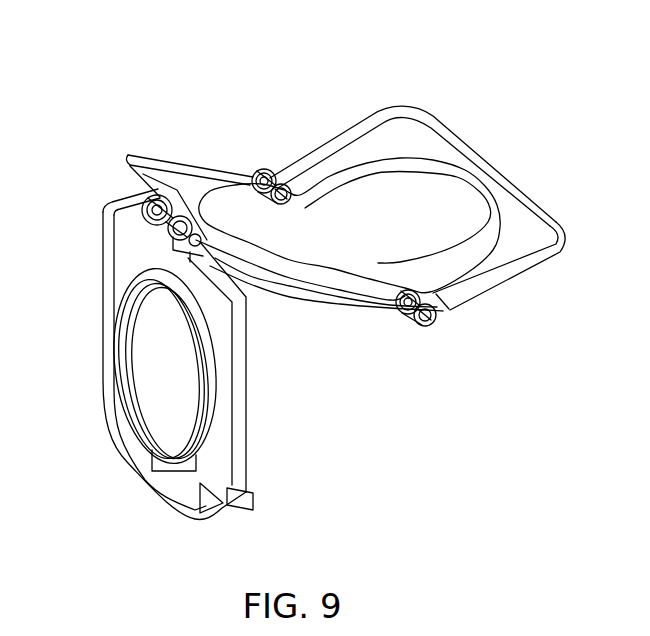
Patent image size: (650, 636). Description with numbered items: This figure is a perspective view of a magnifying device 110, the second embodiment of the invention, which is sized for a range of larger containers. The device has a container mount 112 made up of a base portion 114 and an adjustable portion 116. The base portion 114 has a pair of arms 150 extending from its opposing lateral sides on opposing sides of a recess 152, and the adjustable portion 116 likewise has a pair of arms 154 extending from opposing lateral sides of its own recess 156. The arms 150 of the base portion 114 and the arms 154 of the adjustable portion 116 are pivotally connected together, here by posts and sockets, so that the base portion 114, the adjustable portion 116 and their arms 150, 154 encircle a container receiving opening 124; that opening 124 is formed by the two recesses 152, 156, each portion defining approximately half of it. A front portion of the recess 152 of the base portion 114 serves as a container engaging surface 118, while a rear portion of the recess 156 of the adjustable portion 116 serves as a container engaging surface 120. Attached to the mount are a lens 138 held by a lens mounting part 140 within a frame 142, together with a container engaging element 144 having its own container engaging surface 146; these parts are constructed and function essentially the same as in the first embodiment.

The magnifying device 110 is at (407, 195).
The container mount 112 is at (312, 212).
The base portion 114 is at (313, 307).
The adjustable portion 116 is at (540, 208).
The container engaging surface 118 is at (212, 210).
The container engaging surface 120 is at (458, 172).
The container receiving opening 124 is at (373, 188).
The lens 138 is at (153, 410).
The lens mounting part 140 is at (172, 357).
The frame 142 is at (245, 385).
The container engaging element 144 is at (242, 510).
The container engaging surface 146 is at (228, 480).
The arms 150 is at (212, 172).
The recess 152 is at (319, 247).
The arms 154 is at (355, 228).
The recess 156 is at (410, 223).